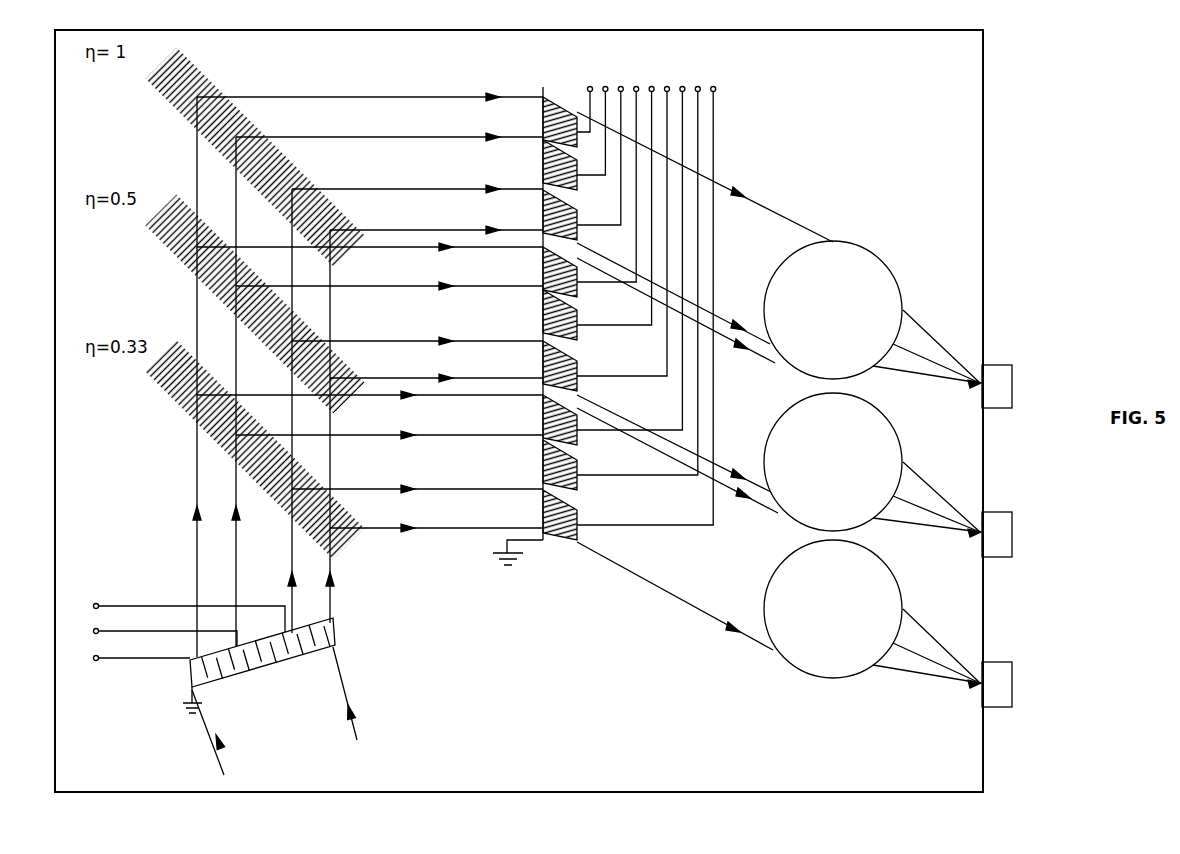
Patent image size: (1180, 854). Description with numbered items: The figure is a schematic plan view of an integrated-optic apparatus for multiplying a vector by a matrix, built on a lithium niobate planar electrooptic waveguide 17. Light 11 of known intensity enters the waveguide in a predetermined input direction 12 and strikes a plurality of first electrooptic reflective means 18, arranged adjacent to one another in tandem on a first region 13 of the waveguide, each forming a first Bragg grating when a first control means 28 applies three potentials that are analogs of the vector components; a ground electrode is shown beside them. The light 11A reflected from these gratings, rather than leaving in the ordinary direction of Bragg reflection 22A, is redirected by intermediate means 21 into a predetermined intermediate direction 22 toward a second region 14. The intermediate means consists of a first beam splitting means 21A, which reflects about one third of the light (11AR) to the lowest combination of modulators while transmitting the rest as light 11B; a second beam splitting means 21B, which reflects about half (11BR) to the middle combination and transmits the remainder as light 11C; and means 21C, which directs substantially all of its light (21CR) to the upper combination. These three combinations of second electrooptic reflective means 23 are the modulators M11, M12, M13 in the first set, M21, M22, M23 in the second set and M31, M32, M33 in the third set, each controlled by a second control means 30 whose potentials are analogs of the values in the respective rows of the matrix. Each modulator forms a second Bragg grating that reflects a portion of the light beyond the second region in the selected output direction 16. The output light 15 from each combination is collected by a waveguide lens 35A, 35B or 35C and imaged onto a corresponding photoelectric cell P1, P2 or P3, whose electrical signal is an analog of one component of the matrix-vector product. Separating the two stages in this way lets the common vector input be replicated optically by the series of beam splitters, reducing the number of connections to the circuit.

The light 11 is at (270, 720).
The light reflected from the first electrooptic reflective means 11A is at (303, 566).
The light transmitted by the first beam splitting means 11B is at (297, 387).
The light transmitted by the second beam splitting means 11C is at (308, 242).
The light reflected by the first beam splitting means 11AR is at (437, 420).
The light reflected by the second beam splitting means 11BR is at (437, 270).
The predetermined input direction 12 is at (204, 722).
The first region 13 is at (174, 690).
The second region 14 is at (572, 562).
The output light 15 is at (745, 262).
The selected output direction 16 is at (762, 205).
The electrooptic waveguide 17 is at (913, 138).
The first electrooptic reflective means 18 is at (333, 641).
The intermediate means 21 is at (250, 303).
The first beam splitting means 21A is at (176, 393).
The second beam splitting means 21B is at (182, 248).
The means for directing light 21C is at (182, 98).
The light directed by means 21C 21CR is at (437, 122).
The predetermined intermediate direction 22 is at (415, 96).
The direction of Bragg reflection 22A is at (197, 545).
The second electrooptic reflective means 23 is at (595, 306).
The first control means 28 is at (107, 588).
The second control means 30 is at (722, 89).
The waveguide lens 35A is at (862, 265).
The waveguide lens 35B is at (880, 436).
The waveguide lens 35C is at (880, 596).
The individual second electrooptic reflective means M11 is at (577, 128).
The individual second electrooptic reflective means M12 is at (579, 173).
The individual second electrooptic reflective means M13 is at (581, 223).
The individual second electrooptic reflective means M21 is at (584, 277).
The individual second electrooptic reflective means M22 is at (585, 323).
The individual second electrooptic reflective means M23 is at (588, 373).
The individual second electrooptic reflective means M31 is at (589, 427).
The individual second electrooptic reflective means M32 is at (592, 473).
The individual second electrooptic reflective means M33 is at (596, 522).
The photoelectric cell P1 is at (1014, 388).
The photoelectric cell P2 is at (1014, 535).
The photoelectric cell P3 is at (1014, 685).